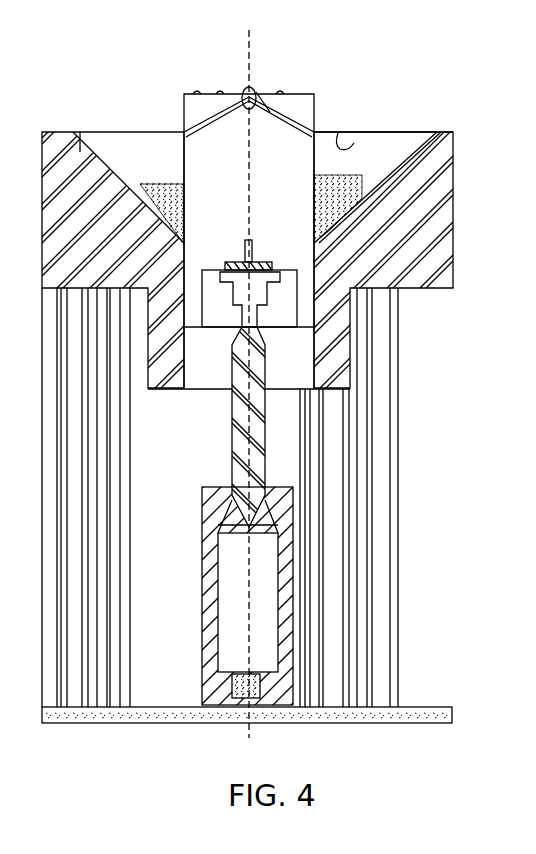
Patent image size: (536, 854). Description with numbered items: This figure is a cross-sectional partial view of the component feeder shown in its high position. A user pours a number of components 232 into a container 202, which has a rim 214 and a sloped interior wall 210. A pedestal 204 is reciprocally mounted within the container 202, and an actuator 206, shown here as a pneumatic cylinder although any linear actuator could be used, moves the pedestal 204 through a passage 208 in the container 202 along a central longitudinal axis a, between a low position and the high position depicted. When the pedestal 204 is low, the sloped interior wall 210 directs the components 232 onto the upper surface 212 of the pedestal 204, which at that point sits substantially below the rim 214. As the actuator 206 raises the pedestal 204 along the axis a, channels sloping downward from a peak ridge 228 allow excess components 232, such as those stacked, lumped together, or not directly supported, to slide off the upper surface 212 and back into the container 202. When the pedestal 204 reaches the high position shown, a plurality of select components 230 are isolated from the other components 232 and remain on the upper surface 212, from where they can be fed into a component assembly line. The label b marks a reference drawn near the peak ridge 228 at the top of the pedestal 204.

The container 202 is at (437, 247).
The pedestal 204 is at (432, 146).
The actuator 206 is at (267, 623).
The passage 208 is at (160, 185).
The sloped interior wall 210 is at (388, 165).
The upper surface 212 is at (313, 93).
The rim 214 is at (58, 132).
The peak ridge 228 is at (246, 92).
The select components 230 is at (197, 92).
The components 232 is at (305, 208).
The central longitudinal axis a is at (250, 370).
The line b is at (257, 92).